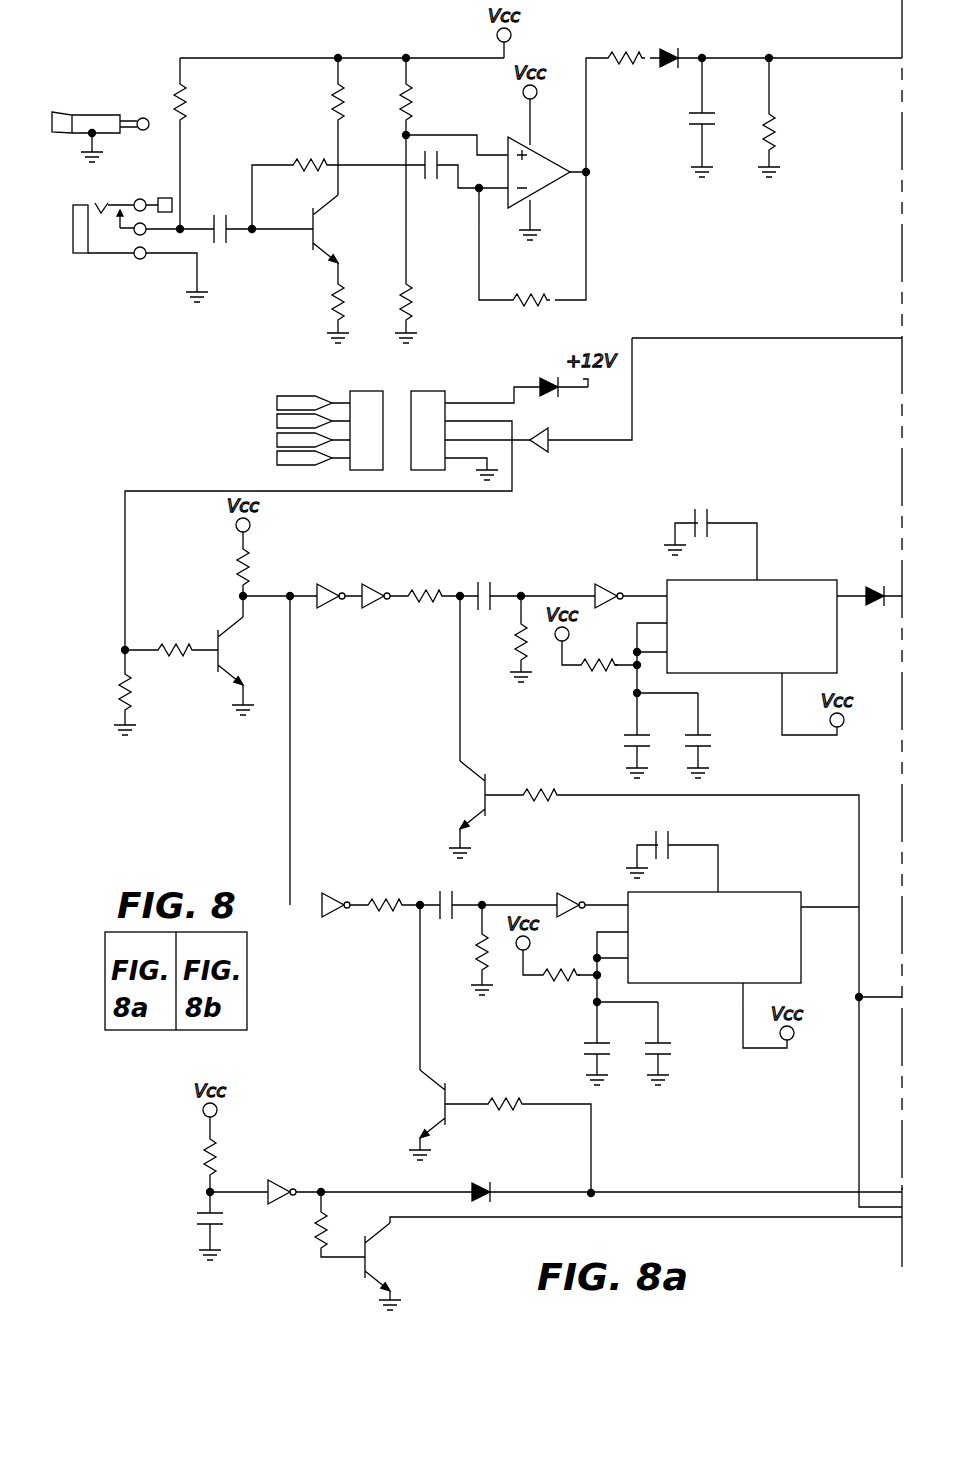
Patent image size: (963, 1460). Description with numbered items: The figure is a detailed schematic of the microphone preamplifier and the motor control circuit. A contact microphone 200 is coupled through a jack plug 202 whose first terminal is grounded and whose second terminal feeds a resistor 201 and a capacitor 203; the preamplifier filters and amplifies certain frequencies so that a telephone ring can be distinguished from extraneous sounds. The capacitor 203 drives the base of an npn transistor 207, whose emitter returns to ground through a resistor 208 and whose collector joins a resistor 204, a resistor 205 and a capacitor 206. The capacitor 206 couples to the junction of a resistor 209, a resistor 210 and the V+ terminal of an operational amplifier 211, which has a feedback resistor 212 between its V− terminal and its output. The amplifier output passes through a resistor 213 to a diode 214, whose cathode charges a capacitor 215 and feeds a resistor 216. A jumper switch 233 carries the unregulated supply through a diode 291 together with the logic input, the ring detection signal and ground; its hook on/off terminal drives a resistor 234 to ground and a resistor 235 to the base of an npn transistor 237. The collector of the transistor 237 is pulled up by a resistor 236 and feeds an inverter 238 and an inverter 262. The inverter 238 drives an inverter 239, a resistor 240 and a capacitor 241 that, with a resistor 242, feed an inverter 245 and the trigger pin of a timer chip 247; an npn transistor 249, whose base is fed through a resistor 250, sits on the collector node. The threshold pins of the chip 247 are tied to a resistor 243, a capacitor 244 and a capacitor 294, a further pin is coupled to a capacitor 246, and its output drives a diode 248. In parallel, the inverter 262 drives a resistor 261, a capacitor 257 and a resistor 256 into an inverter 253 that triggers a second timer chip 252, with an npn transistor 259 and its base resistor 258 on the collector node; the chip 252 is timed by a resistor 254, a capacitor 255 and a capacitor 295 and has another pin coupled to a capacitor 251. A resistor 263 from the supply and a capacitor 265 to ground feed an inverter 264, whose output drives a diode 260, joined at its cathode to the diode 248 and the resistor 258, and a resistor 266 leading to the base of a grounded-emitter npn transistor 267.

The contact microphone 200 is at (72, 112).
The resistor 201 is at (185, 93).
The jack plug 202 is at (91, 262).
The capacitor 203 is at (229, 238).
The resistor 204 is at (301, 158).
The resistor 205 is at (348, 94).
The capacitor 206 is at (423, 182).
The npn transistor 207 is at (327, 212).
The resistor 208 is at (346, 293).
The resistor 209 is at (416, 94).
The resistor 210 is at (418, 293).
The operational amplifier 211 is at (553, 184).
The resistor 212 is at (518, 298).
The resistor 213 is at (616, 50).
The diode 214 is at (680, 48).
The capacitor 215 is at (725, 99).
The resistor 216 is at (776, 128).
The jumper switch 233 is at (418, 391).
The diode 291 is at (541, 384).
The resistor 234 is at (117, 686).
The resistor 235 is at (162, 641).
The resistor 236 is at (235, 552).
The npn transistor 237 is at (226, 632).
The inverter 238 is at (327, 584).
The inverter 239 is at (373, 582).
The resistor 240 is at (413, 590).
The capacitor 241 is at (493, 584).
The resistor 242 is at (512, 632).
The resistor 243 is at (576, 655).
The capacitor 244 is at (644, 734).
The capacitor 294 is at (704, 734).
The inverter 245 is at (622, 584).
The capacitor 246 is at (708, 512).
The chip 247 is at (779, 580).
The diode 248 is at (869, 588).
The npn transistor 249 is at (482, 792).
The resistor 250 is at (520, 792).
The capacitor 251 is at (668, 836).
The chip 252 is at (740, 892).
The inverter 253 is at (583, 898).
The resistor 254 is at (538, 966).
The capacitor 255 is at (603, 1042).
The capacitor 295 is at (663, 1042).
The resistor 256 is at (478, 950).
The capacitor 257 is at (454, 892).
The resistor 258 is at (484, 1098).
The npn transistor 259 is at (438, 1098).
The diode 260 is at (492, 1186).
The resistor 261 is at (374, 898).
The inverter 262 is at (350, 882).
The resistor 263 is at (205, 1150).
The inverter 264 is at (284, 1182).
The capacitor 265 is at (200, 1224).
The resistor 266 is at (317, 1222).
The npn transistor 267 is at (362, 1242).